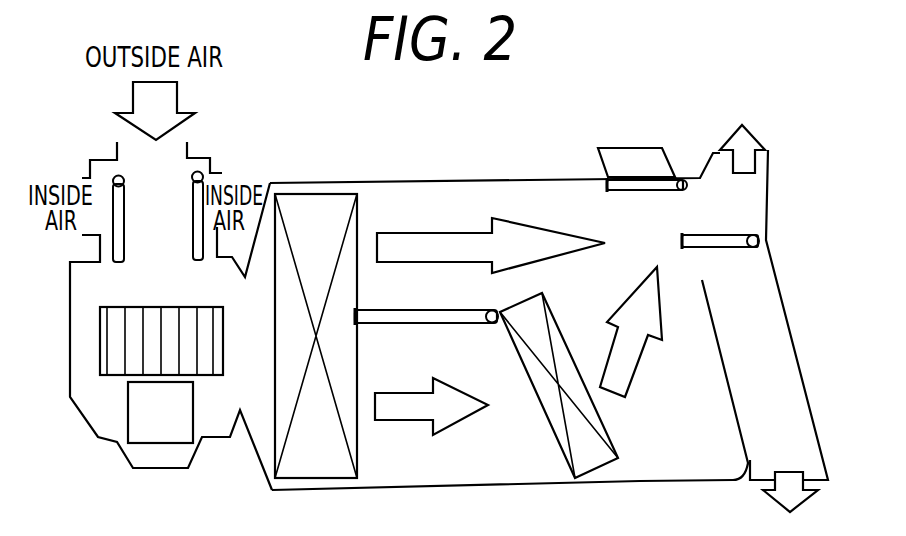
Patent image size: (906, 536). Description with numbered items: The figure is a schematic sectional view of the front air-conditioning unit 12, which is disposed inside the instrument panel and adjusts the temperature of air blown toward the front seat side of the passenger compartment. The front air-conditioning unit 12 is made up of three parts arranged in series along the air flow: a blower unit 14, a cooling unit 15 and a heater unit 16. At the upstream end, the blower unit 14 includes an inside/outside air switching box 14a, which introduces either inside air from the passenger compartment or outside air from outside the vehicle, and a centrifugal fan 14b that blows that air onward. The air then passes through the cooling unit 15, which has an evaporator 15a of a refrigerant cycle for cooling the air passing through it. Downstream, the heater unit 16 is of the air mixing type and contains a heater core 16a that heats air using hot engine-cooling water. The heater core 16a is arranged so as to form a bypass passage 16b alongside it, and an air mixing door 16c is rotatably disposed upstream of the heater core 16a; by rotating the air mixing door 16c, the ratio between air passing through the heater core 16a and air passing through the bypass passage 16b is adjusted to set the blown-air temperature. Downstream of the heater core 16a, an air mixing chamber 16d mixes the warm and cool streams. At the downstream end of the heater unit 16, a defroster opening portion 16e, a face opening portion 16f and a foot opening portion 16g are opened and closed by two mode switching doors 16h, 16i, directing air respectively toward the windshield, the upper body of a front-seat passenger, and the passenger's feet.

The front air-conditioning unit 12 is at (348, 174).
The blower unit 14 is at (70, 298).
The inside/outside air switching box 14a is at (90, 160).
The centrifugal fan 14b is at (125, 335).
The cooling unit 15 is at (297, 181).
The evaporator 15a is at (300, 440).
The heater unit 16 is at (523, 177).
The heater core 16a is at (552, 430).
The bypass passage 16b is at (507, 212).
The air mixing door 16c is at (377, 310).
The air mixing chamber 16d is at (630, 273).
The defroster opening portion 16e is at (635, 162).
The face opening portion 16f is at (743, 177).
The foot opening portion 16g is at (787, 463).
The mode switching door 16h is at (620, 188).
The mode switching door 16i is at (737, 233).